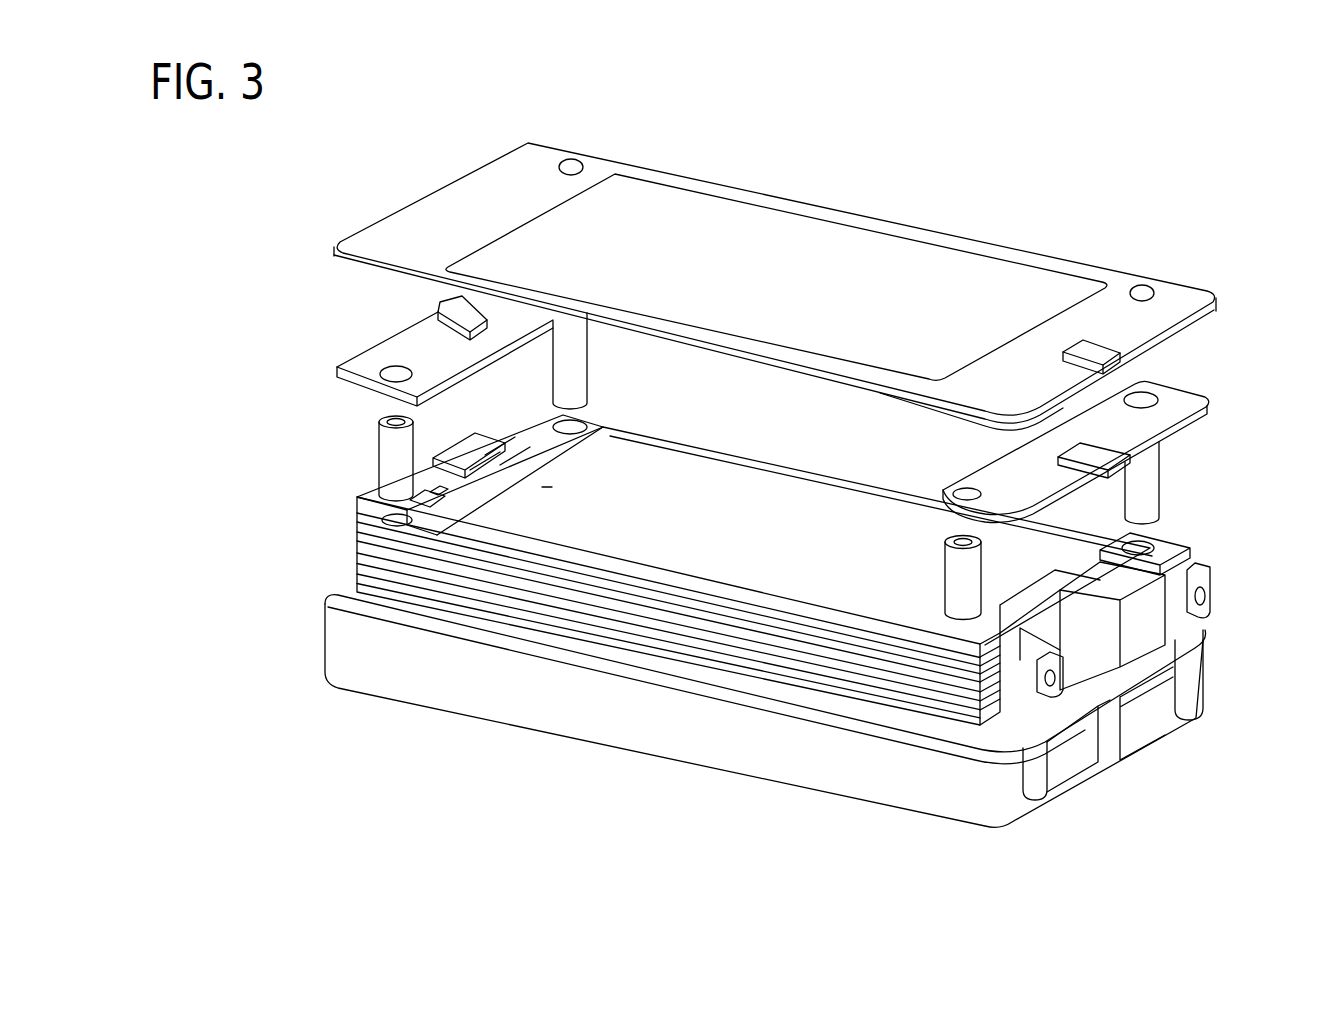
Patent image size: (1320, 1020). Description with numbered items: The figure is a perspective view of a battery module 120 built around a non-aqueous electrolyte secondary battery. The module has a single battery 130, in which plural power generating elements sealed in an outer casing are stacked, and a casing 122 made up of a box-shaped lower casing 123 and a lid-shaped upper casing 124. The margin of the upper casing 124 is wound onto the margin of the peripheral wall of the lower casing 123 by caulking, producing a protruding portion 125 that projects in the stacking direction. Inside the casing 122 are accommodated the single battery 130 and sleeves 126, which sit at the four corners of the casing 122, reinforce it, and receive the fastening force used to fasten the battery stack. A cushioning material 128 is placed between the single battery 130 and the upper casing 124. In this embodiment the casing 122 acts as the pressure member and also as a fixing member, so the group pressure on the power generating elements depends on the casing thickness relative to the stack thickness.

The battery module 120 is at (273, 209).
The casing 122 is at (238, 488).
The lower casing 123 is at (332, 640).
The upper casing 124 is at (407, 243).
The protruding portion 125 is at (1190, 290).
The sleeve 126 is at (388, 459).
The cushioning material 128 is at (467, 370).
The single battery 130 is at (688, 477).